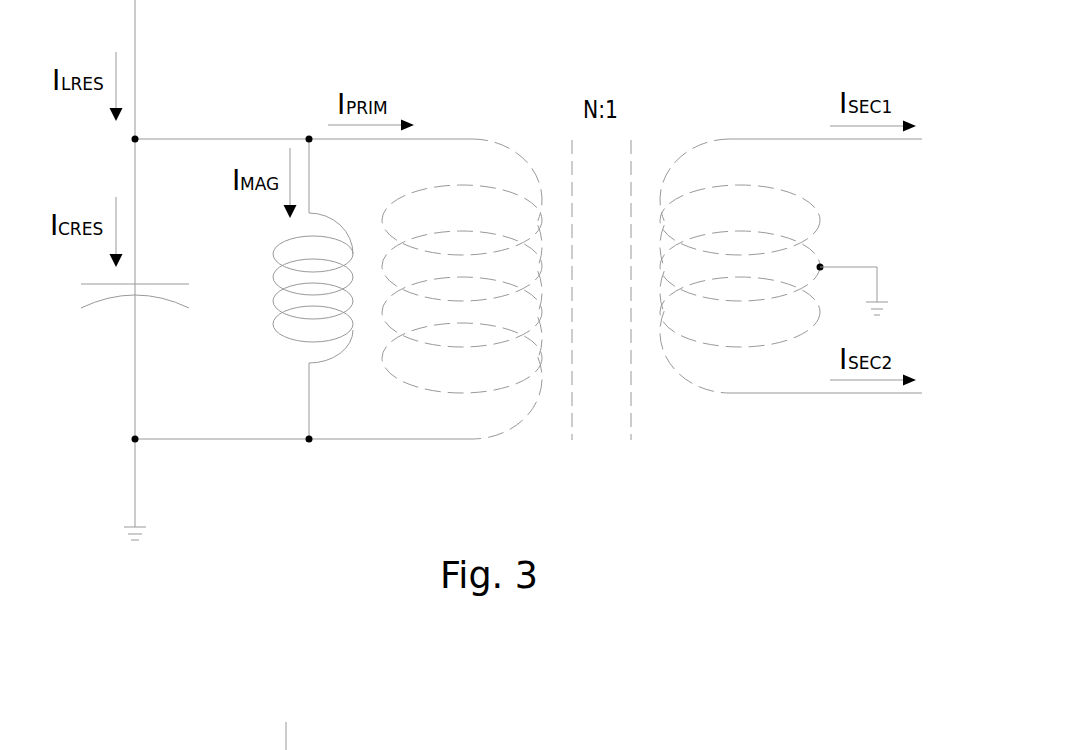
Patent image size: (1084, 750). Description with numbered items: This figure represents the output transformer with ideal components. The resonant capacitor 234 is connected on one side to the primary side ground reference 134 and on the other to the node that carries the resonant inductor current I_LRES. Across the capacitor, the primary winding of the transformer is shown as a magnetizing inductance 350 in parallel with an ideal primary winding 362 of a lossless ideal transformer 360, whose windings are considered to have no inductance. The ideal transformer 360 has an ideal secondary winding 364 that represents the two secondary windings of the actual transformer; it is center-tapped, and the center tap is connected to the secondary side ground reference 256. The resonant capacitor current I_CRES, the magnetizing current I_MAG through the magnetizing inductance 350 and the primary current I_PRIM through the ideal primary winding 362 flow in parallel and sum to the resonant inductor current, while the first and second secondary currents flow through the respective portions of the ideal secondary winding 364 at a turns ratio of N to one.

The primary side ground reference 134 is at (144, 527).
The resonant capacitor 234 is at (153, 283).
The magnetizing inductance 350 is at (273, 300).
The ideal transformer 360 is at (652, 226).
The ideal primary winding 362 is at (505, 112).
The ideal secondary winding 364 is at (687, 106).
The secondary side ground reference 256 is at (883, 302).